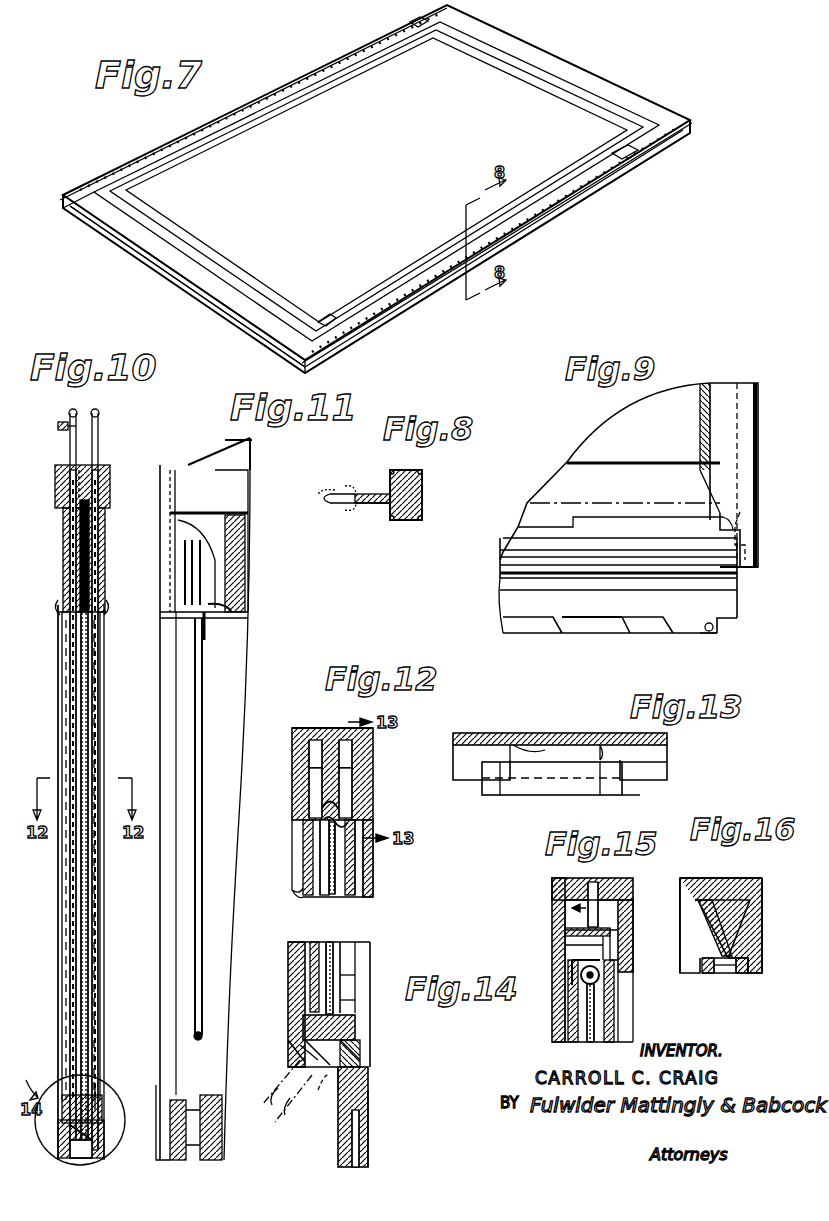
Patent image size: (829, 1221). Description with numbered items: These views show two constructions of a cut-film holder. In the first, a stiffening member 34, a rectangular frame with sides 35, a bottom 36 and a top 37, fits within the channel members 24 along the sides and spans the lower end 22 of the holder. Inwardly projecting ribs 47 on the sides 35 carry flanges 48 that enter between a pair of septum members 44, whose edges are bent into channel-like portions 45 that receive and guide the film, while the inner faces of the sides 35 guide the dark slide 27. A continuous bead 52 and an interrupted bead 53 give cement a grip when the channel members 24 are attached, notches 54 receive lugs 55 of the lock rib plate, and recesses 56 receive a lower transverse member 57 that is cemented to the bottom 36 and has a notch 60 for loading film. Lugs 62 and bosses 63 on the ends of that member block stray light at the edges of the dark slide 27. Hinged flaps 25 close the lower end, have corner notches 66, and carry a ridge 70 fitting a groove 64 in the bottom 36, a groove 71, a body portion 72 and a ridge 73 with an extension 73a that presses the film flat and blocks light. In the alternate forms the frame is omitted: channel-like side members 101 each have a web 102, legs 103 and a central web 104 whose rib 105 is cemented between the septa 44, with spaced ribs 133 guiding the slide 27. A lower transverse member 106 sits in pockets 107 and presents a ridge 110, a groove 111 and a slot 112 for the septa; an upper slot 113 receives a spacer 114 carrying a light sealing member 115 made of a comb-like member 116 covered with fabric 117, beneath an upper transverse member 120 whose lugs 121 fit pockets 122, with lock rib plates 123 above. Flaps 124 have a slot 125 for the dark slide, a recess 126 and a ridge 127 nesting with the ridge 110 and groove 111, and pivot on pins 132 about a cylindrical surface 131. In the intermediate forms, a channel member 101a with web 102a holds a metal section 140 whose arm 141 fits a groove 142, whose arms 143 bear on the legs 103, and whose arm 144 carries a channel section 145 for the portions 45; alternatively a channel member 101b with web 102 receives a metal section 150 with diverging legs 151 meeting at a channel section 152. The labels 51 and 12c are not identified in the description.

In FIG. 9, the lower end 22 is at (740, 558).
In FIG. 9, the channel member 24 is at (758, 450).
In FIG. 9, the hinged flap member 25 is at (648, 636).
In FIG. 10, the dark slide 27 is at (70, 686).
In FIG. 11, the dark slide 27 is at (222, 812).
In FIG. 9, the dark slide 27 is at (671, 436).
In FIG. 12, the dark slide 27 is at (345, 896).
In FIG. 13, the dark slide 27 is at (535, 785).
In FIG. 15, the dark slide 27 is at (570, 1022).
In FIG. 7, the stiffening member 34 is at (620, 182).
In FIG. 9, the stiffening member 34 is at (732, 578).
In FIG. 7, the side 35 is at (258, 98).
In FIG. 8, the side 35 is at (424, 505).
In FIG. 7, the bottom 36 is at (196, 298).
In FIG. 7, the top 37 is at (612, 90).
In FIG. 10, the septum member 44 is at (80, 740).
In FIG. 8, the septum member 44 is at (328, 505).
In FIG. 9, the septum member 44 is at (665, 486).
In FIG. 12, the septum member 44 is at (340, 884).
In FIG. 14, the septum member 44 is at (340, 940).
In FIG. 15, the septum member 44 is at (598, 1008).
In FIG. 11, the channel-like portion 45 is at (220, 618).
In FIG. 12, the channel-like portion 45 is at (352, 822).
In FIG. 15, the channel-like portion 45 is at (578, 985).
In FIG. 7, the inwardly projecting rib 47 is at (322, 90).
In FIG. 8, the inwardly projecting rib 47 is at (378, 492).
In FIG. 8, the inwardly projecting flange 48 is at (348, 515).
In FIG. 7, the inner flange 51 is at (525, 70).
In FIG. 7, the continuous bead 52 is at (360, 62).
In FIG. 8, the continuous bead 52 is at (394, 472).
In FIG. 7, the interrupted bead 53 is at (322, 76).
In FIG. 8, the interrupted bead 53 is at (422, 474).
In FIG. 7, the outwardly facing notch 54 is at (395, 36).
In FIG. 7, the lug 55 is at (88, 220).
In FIG. 7, the recess 56 is at (312, 318).
In FIG. 9, the lower transverse member 57 is at (520, 547).
In FIG. 9, the notch 60 is at (560, 530).
In FIG. 9, the lug 62 is at (748, 490).
In FIG. 9, the boss 63 is at (748, 508).
In FIG. 7, the transverse groove 64 is at (240, 322).
In FIG. 9, the corner notch 66 is at (728, 625).
In FIG. 9, the ridge 70 is at (500, 570).
In FIG. 9, the groove 71 is at (504, 590).
In FIG. 9, the body portion 72 is at (505, 608).
In FIG. 9, the ridge 73 is at (505, 630).
In FIG. 9, the ridge extension 73a is at (712, 636).
In FIG. 10, the channel-like side member 101 is at (56, 1016).
In FIG. 11, the channel-like side member 101 is at (178, 880).
In FIG. 12, the channel-like side member 101 is at (304, 728).
In FIG. 14, the channel-like side member 101 is at (328, 1090).
In FIG. 15, the channel member 101a is at (552, 890).
In FIG. 16, the channel member 101b is at (708, 882).
In FIG. 12, the web 102 is at (322, 730).
In FIG. 13, the web 102 is at (500, 735).
In FIG. 16, the web 102 is at (720, 880).
In FIG. 15, the web 102a is at (592, 878).
In FIG. 10, the leg 103 is at (62, 948).
In FIG. 11, the leg 103 is at (210, 1034).
In FIG. 12, the leg 103 is at (352, 772).
In FIG. 14, the leg 103 is at (366, 962).
In FIG. 16, the leg 103 is at (684, 962).
In FIG. 12, the central web 104 is at (352, 765).
In FIG. 12, the rib 105 is at (335, 800).
In FIG. 11, the lower transverse member 106 is at (186, 1110).
In FIG. 11, the pocket 107 is at (164, 1078).
In FIG. 10, the ridge 110 is at (98, 1100).
In FIG. 14, the ridge 110 is at (305, 1030).
In FIG. 14, the groove 111 is at (350, 992).
In FIG. 14, the slot 112 is at (350, 1008).
In FIG. 11, the slot 113 is at (182, 618).
In FIG. 11, the spacer 114 is at (208, 625).
In FIG. 10, the light sealing member 115 is at (66, 552).
In FIG. 11, the light sealing member 115 is at (208, 548).
In FIG. 10, the comb-like member 116 is at (100, 560).
In FIG. 11, the comb-like member 116 is at (198, 576).
In FIG. 10, the fabric 117 is at (104, 600).
In FIG. 11, the fabric 117 is at (218, 528).
In FIG. 10, the upper transverse member 120 is at (100, 448).
In FIG. 11, the upper transverse member 120 is at (225, 440).
In FIG. 11, the lug 121 is at (184, 452).
In FIG. 10, the pocket 122 is at (150, 500).
In FIG. 11, the pocket 122 is at (154, 500).
In FIG. 10, the lock rib plate 123 is at (62, 530).
In FIG. 11, the lock rib plate 123 is at (245, 494).
In FIG. 10, the flap 124 is at (58, 1140).
In FIG. 11, the flap 124 is at (214, 1150).
In FIG. 14, the flap 124 is at (302, 934).
In FIG. 14, the slot 125 is at (315, 942).
In FIG. 14, the recess 126 is at (362, 1080).
In FIG. 10, the ridge 127 is at (95, 1082).
In FIG. 14, the ridge 127 is at (368, 1134).
In FIG. 14, the cylindrical surface 131 is at (372, 1048).
In FIG. 14, the pin 132 is at (300, 1061).
In FIG. 12, the rib 133 is at (312, 760).
In FIG. 13, the rib 133 is at (600, 740).
In FIG. 15, the metal section 140 is at (566, 908).
In FIG. 15, the arm 141 is at (632, 900).
In FIG. 15, the groove 142 is at (606, 880).
In FIG. 15, the adjacent arm 143 is at (612, 934).
In FIG. 15, the arm 144 is at (568, 948).
In FIG. 15, the channel section 145 is at (570, 966).
In FIG. 16, the metal section 150 is at (740, 980).
In FIG. 16, the diverging leg 151 is at (716, 938).
In FIG. 16, the channel section 152 is at (716, 972).
In FIG. 10, the clamp 12c is at (100, 1145).